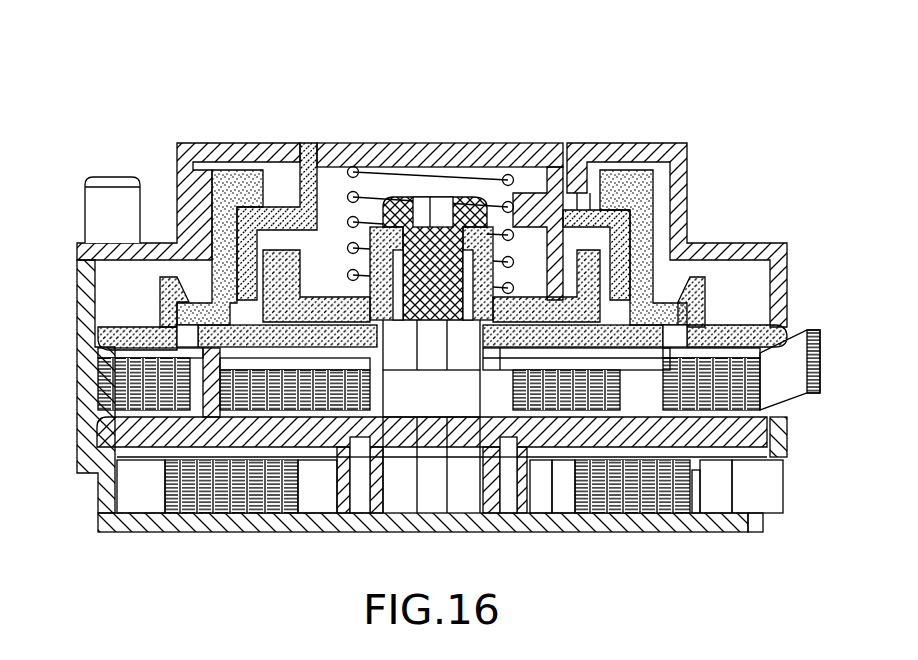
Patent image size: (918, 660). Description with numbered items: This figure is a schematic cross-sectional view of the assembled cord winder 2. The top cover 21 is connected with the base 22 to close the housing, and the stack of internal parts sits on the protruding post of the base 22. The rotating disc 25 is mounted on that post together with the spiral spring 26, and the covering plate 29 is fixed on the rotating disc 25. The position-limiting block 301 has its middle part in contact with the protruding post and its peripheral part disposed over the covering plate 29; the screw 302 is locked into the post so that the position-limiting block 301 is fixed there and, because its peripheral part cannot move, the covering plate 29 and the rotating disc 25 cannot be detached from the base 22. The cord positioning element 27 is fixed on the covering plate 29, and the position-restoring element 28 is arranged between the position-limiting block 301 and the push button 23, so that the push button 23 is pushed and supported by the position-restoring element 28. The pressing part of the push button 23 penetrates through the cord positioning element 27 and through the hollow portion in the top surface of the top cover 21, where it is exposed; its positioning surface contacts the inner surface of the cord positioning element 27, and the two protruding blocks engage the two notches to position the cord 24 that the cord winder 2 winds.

The cord winder 2 is at (642, 44).
The top cover 21 is at (233, 152).
The base 22 is at (218, 523).
The push button 23 is at (483, 287).
The cord 24 is at (737, 383).
The rotating disc 25 is at (123, 430).
The spiral spring 26 is at (583, 390).
The cord positioning element 27 is at (225, 215).
The position-restoring element 28 is at (427, 172).
The covering plate 29 is at (133, 327).
The position-limiting block 301 is at (578, 165).
The screw 302 is at (425, 177).